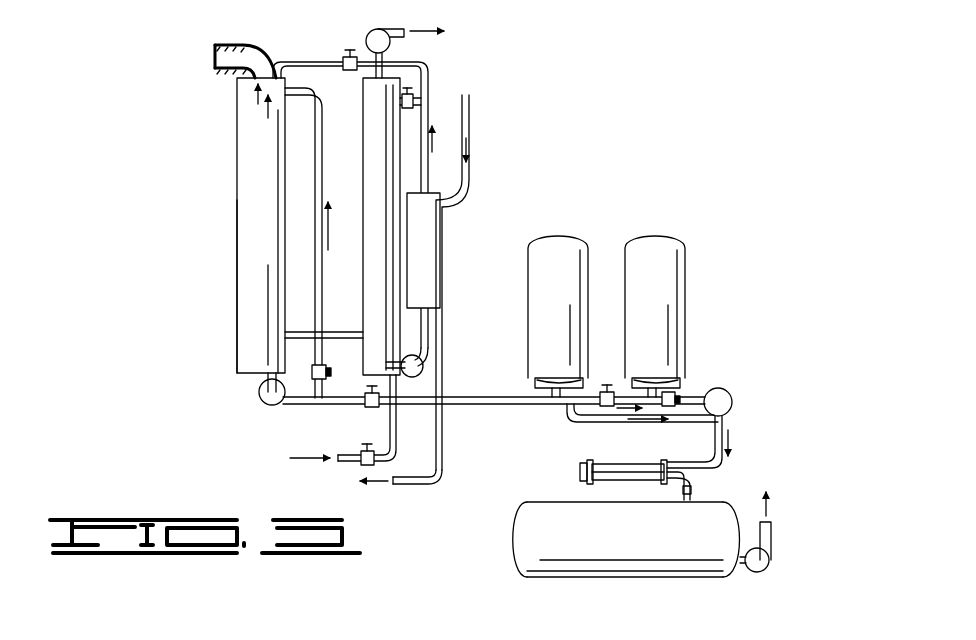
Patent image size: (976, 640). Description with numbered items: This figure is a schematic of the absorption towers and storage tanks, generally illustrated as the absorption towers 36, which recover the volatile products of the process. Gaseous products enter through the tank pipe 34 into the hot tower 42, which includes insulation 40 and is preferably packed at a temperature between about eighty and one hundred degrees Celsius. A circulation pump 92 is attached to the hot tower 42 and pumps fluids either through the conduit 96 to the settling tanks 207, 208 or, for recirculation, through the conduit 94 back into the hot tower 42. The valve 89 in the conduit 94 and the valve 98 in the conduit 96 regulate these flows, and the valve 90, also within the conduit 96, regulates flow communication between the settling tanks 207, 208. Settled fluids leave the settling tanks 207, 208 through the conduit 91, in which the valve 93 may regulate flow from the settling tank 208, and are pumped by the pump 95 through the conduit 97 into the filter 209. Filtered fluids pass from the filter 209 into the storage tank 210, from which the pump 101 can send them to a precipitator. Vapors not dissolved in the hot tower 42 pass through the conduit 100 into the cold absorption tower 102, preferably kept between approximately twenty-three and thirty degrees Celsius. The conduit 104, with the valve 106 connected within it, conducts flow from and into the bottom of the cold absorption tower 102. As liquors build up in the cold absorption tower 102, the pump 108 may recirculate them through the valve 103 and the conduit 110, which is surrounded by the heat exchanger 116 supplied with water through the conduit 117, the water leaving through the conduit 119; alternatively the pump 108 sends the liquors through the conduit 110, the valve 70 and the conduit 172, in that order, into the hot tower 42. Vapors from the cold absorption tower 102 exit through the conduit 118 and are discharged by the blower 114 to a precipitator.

The tank pipe 34 is at (243, 44).
The absorption towers 36 is at (226, 177).
The insulation 40 is at (250, 50).
The hot tower 42 is at (237, 330).
The valve 70 is at (348, 71).
The valve 89 is at (324, 366).
The valve 90 is at (607, 390).
The conduit 91 is at (574, 420).
The circulation pump 92 is at (260, 397).
The valve 93 is at (674, 397).
The conduit 94 is at (322, 139).
The pump 95 is at (731, 400).
The conduit 96 is at (410, 408).
The conduit 97 is at (724, 432).
The valve 98 is at (366, 409).
The conduit 100 is at (337, 332).
The pump 101 is at (772, 562).
The cold absorption tower 102 is at (363, 173).
The valve 103 is at (401, 108).
The conduit 104 is at (340, 452).
The valve 106 is at (360, 459).
The pump 108 is at (424, 360).
The conduit 110 is at (428, 80).
The blower 114 is at (393, 26).
The heat exchanger 116 is at (428, 256).
The conduit 117 is at (470, 116).
The conduit 118 is at (368, 36).
The conduit 119 is at (440, 462).
The conduit 172 is at (327, 63).
The settling tank 207 is at (575, 278).
The settling tank 208 is at (672, 278).
The filter 209 is at (640, 464).
The storage tank 210 is at (636, 546).